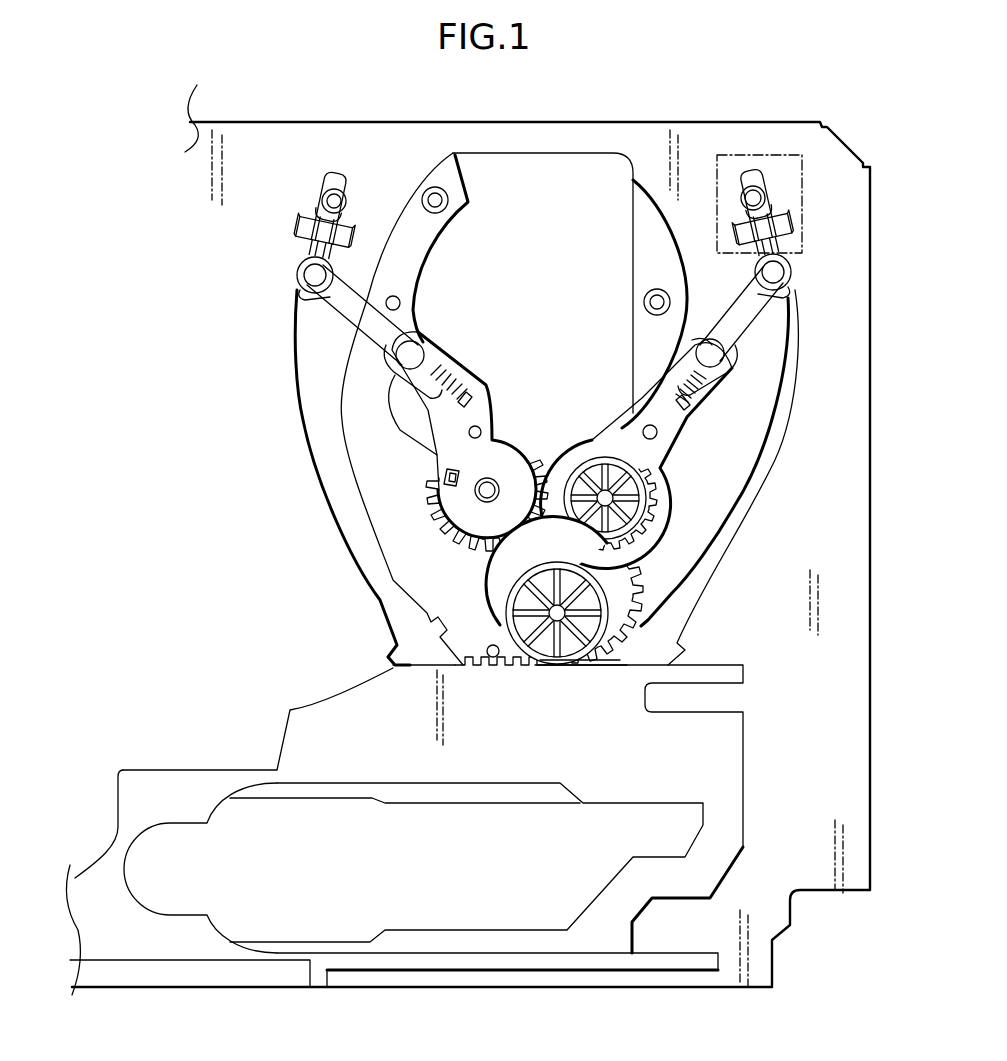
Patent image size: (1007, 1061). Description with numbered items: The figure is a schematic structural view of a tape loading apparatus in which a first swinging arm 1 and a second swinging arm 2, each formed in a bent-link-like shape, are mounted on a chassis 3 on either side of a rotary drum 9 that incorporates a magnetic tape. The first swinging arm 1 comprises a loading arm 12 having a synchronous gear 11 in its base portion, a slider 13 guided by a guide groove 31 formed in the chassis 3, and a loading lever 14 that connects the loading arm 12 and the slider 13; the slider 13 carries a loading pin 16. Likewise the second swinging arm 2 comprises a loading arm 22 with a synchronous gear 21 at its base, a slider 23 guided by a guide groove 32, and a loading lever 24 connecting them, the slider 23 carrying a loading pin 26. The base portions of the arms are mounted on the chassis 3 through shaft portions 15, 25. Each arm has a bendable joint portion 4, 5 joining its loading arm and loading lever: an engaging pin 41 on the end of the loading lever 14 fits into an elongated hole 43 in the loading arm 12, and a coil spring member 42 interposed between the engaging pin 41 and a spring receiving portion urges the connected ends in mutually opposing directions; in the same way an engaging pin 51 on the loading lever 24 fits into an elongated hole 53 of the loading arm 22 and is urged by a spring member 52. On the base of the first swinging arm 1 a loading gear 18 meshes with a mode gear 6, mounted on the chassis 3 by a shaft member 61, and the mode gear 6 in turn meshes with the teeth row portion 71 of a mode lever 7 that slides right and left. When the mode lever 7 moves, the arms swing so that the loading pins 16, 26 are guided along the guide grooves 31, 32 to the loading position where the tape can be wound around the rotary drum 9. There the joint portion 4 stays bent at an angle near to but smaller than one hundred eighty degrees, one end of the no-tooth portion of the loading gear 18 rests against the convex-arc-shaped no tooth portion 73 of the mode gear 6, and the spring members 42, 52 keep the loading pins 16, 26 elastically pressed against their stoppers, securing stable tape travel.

The first swinging arm 1 is at (714, 278).
The second swinging arm 2 is at (408, 434).
The chassis 3 is at (870, 655).
The joint portion 4 is at (692, 401).
The joint portion 5 is at (420, 320).
The mode gear 6 is at (642, 590).
The mode lever 7 is at (338, 706).
The rotary drum 9 is at (575, 150).
The synchronous gear 11 is at (675, 522).
The loading arm 12 is at (690, 445).
The slider 13 is at (790, 225).
The loading lever 14 is at (784, 297).
The shaft portion 15 is at (606, 482).
The loading pin 16 is at (756, 186).
The loading gear 18 is at (658, 495).
The synchronous gear 21 is at (458, 540).
The loading arm 22 is at (440, 468).
The slider 23 is at (322, 228).
The loading lever 24 is at (333, 298).
The shaft portion 25 is at (490, 486).
The loading pin 26 is at (333, 188).
The guide groove 31 is at (750, 322).
The guide groove 32 is at (296, 350).
The engaging pin 41 is at (700, 352).
The spring member 42 is at (712, 402).
The elongated hole 43 is at (725, 353).
The engaging pin 51 is at (416, 356).
The spring member 52 is at (432, 385).
The elongated hole 53 is at (385, 365).
The shaft member 61 is at (518, 606).
The teeth row portion 71 is at (490, 670).
The convex-arc-shaped no tooth portion 73 is at (596, 550).